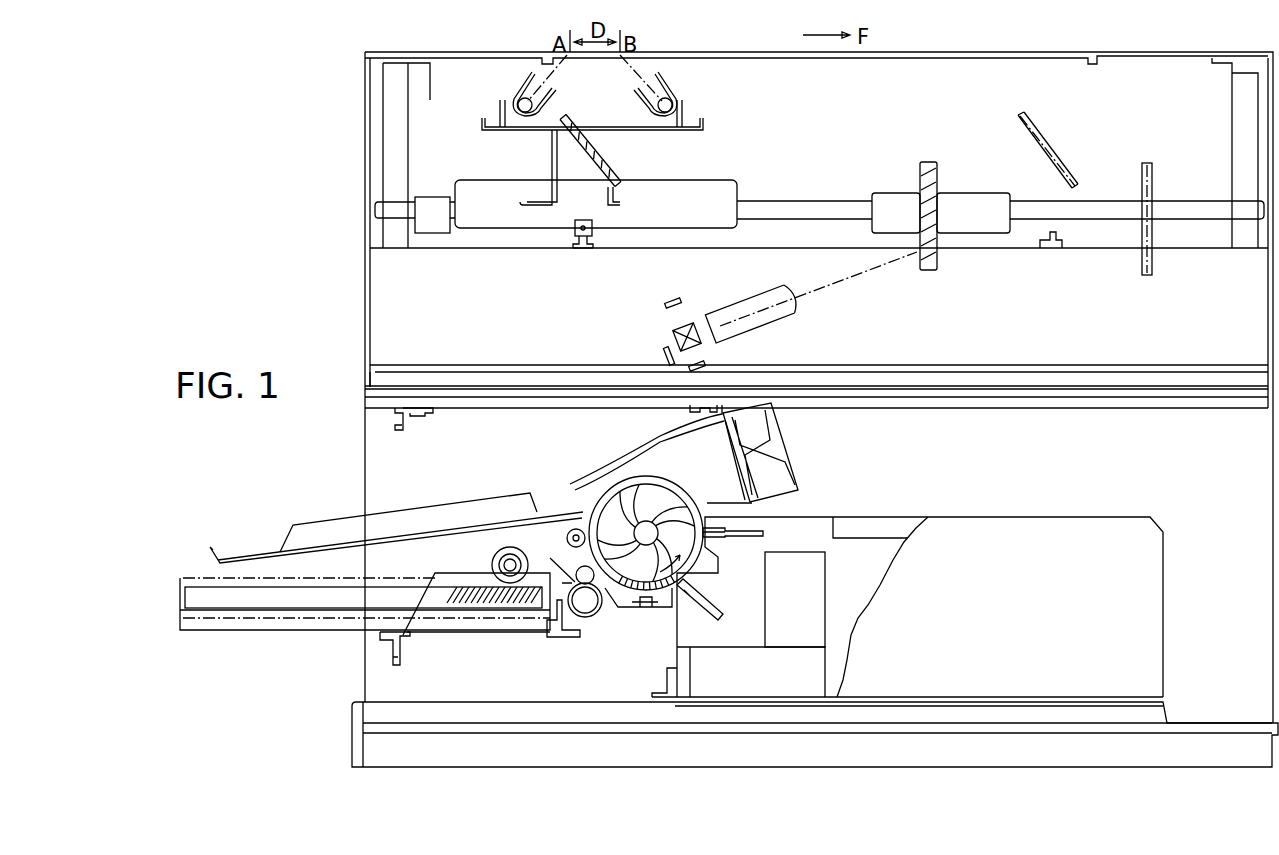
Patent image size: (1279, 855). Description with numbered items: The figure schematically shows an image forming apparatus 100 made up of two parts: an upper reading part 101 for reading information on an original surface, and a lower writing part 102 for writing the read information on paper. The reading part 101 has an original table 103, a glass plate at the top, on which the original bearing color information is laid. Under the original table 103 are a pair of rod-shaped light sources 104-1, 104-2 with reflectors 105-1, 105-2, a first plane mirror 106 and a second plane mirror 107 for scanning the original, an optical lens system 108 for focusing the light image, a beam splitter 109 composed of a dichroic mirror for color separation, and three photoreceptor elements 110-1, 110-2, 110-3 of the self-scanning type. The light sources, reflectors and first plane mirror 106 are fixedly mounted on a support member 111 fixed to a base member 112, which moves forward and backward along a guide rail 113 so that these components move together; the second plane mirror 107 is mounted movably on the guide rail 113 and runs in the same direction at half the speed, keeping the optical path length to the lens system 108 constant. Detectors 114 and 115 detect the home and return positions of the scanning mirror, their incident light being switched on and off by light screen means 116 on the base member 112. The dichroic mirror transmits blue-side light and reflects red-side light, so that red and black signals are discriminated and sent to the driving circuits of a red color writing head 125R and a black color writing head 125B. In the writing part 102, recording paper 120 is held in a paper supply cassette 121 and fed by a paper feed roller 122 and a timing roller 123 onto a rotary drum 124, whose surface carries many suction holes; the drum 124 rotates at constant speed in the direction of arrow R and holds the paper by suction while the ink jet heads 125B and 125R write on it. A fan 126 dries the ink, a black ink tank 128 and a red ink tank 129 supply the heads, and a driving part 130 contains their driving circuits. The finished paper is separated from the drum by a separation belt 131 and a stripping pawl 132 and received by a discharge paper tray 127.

The image forming apparatus 100 is at (349, 160).
The reading part 101 is at (349, 261).
The writing part 102 is at (349, 446).
The original table 103 is at (775, 56).
The rod-shaped light source 104-1 is at (540, 111).
The rod-shaped light source 104-2 is at (680, 94).
The reflector 105-1 is at (522, 94).
The reflector 105-2 is at (660, 77).
The first plane mirror 106 is at (605, 162).
The second plane mirror 107 is at (920, 170).
The optical lens system 108 is at (760, 290).
The beam splitter 109 is at (674, 331).
The photoreceptor element 110-1 is at (670, 300).
The photoreceptor element 110-2 is at (663, 356).
The photoreceptor element 110-3 is at (706, 363).
The support member 111 is at (553, 151).
The base member 112 is at (706, 186).
The guide rail 113 is at (805, 205).
The detector 114 is at (582, 250).
The detector 115 is at (1052, 250).
The light screen means 116 is at (592, 223).
The recording paper 120 is at (280, 600).
The paper supply cassette 121 is at (310, 625).
The paper feed roller 122 is at (494, 560).
The timing roller 123 is at (597, 612).
The rotary drum 124 is at (670, 490).
The red color writing head 125R is at (750, 536).
The black color writing head 125B is at (703, 612).
The fan 126 is at (780, 475).
The discharge paper tray 127 is at (285, 555).
The black ink tank 128 is at (830, 674).
The red ink tank 129 is at (822, 576).
The driving part 130 is at (878, 518).
The separation belt 131 is at (568, 546).
The stripping pawl 132 is at (582, 505).